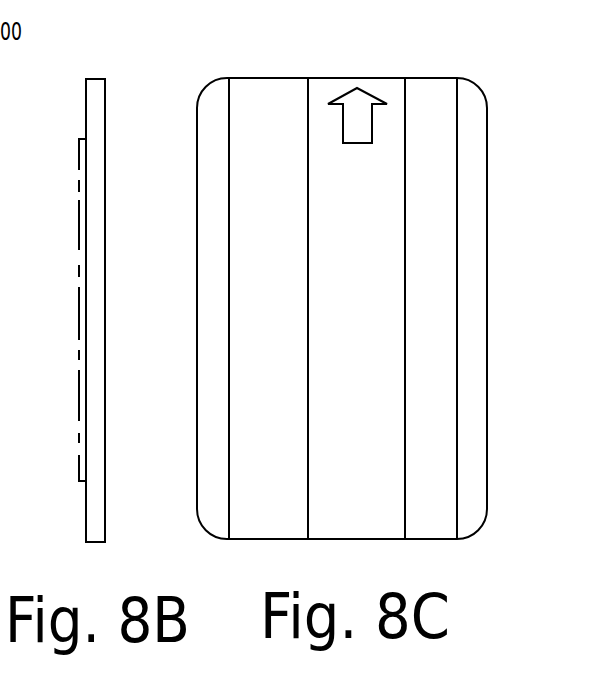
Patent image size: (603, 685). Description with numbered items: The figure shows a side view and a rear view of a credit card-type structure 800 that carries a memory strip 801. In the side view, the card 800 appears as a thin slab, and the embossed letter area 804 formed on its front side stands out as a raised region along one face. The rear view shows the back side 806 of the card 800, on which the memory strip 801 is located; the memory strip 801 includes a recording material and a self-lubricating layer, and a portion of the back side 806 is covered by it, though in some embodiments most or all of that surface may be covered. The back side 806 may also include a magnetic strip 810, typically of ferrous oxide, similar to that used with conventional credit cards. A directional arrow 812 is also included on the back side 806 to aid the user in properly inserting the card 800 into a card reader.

In FIG. 8B, the credit card-type structure 800 is at (112, 72).
In FIG. 8C, the credit card-type structure 800 is at (460, 52).
In FIG. 8C, the memory strip 801 is at (242, 390).
In FIG. 8B, the embossed letter area 804 is at (79, 172).
In FIG. 8C, the back side 806 is at (380, 353).
In FIG. 8C, the magnetic strip 810 is at (457, 265).
In FIG. 8C, the directional arrow 812 is at (365, 95).